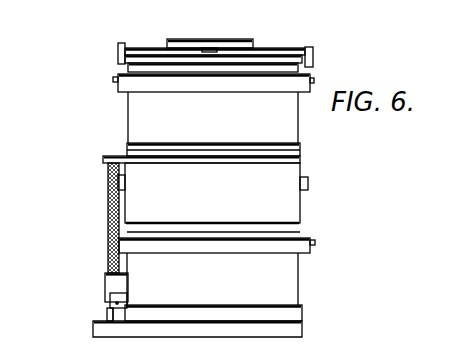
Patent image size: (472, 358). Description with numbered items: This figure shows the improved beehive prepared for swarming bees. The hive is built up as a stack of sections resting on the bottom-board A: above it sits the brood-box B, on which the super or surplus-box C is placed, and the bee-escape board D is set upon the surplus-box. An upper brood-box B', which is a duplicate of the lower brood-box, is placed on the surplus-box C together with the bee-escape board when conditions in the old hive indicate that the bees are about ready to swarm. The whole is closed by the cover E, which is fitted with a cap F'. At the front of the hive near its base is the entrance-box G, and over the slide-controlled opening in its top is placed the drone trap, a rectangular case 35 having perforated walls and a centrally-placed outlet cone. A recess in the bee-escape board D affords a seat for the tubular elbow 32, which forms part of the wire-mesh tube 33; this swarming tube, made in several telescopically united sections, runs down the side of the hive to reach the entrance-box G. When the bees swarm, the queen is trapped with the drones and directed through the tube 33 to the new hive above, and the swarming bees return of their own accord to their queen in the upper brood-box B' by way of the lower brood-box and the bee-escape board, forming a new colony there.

The bottom-board A is at (302, 333).
The brood-box B is at (232, 279).
The upper brood-box B' is at (195, 99).
The super or surplus-box C is at (300, 208).
The bee-escape board D is at (300, 160).
The cover E is at (118, 53).
The cap F' is at (210, 34).
The entrance-box G is at (107, 309).
The tubular elbow 32 is at (103, 159).
The wire-mesh tube 33 is at (108, 207).
The rectangular case 35 is at (108, 288).